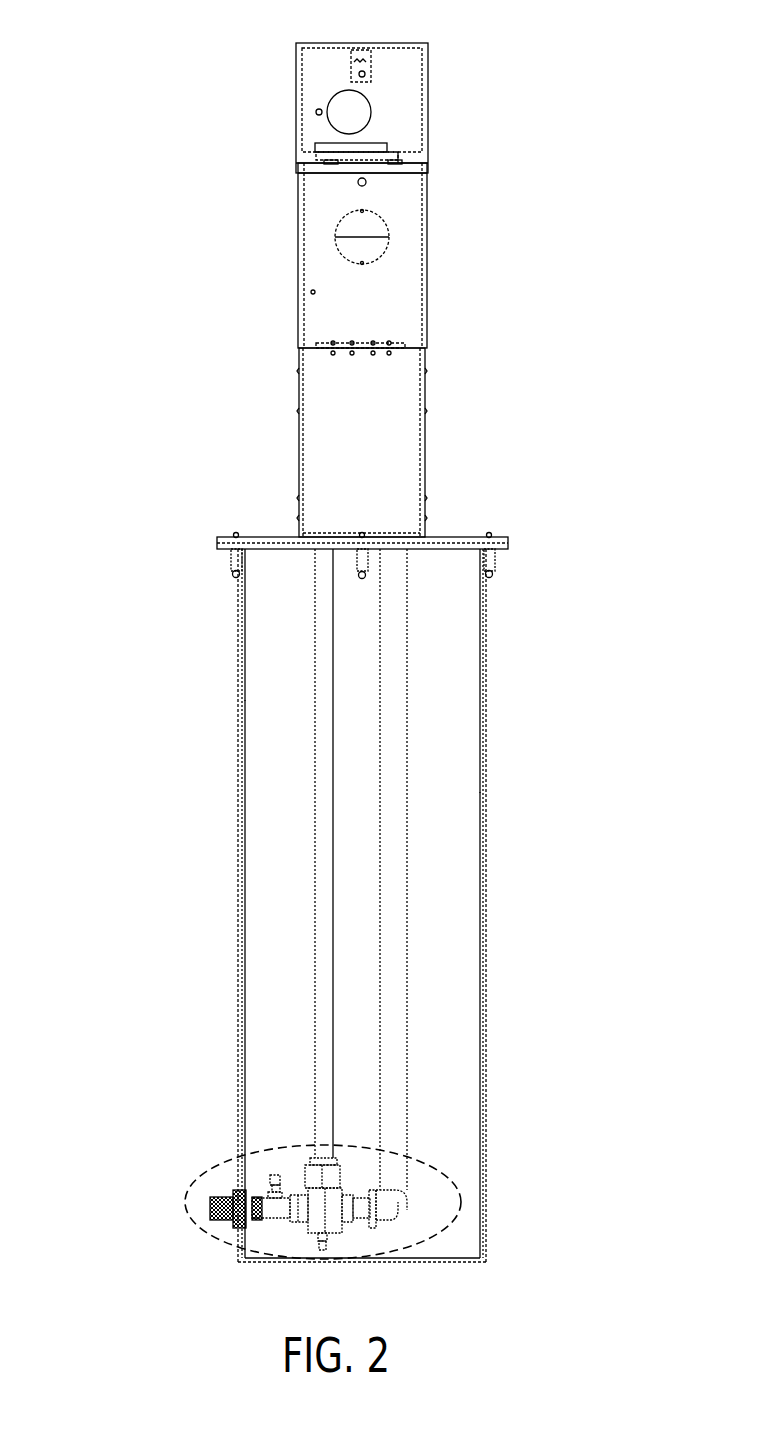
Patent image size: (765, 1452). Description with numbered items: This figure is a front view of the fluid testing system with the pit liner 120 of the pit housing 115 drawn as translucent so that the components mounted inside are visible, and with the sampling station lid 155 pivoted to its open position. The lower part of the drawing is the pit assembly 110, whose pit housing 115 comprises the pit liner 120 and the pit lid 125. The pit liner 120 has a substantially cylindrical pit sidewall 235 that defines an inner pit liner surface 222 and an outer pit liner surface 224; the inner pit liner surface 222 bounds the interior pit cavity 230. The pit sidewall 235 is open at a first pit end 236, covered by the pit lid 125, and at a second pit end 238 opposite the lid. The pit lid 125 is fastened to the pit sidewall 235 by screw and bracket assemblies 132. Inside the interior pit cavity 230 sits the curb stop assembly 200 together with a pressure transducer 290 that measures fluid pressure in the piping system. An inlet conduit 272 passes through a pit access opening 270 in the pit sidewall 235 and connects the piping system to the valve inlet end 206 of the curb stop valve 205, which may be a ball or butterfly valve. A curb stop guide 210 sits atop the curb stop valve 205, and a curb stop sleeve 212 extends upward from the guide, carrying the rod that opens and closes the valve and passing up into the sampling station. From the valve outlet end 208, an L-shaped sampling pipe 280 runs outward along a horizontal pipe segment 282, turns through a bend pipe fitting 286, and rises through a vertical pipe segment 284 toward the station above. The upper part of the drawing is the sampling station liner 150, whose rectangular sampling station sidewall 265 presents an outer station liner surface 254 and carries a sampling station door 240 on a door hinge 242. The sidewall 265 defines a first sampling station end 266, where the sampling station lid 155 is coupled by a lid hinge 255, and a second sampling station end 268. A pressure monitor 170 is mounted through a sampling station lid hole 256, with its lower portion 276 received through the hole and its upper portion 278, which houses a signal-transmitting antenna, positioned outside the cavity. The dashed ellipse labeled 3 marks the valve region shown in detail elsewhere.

The pit assembly 110 is at (88, 895).
The pit housing 115 is at (182, 973).
The pit liner 120 is at (210, 655).
The pit lid 125 is at (281, 545).
The screw and bracket assemblies 132 is at (360, 559).
The sampling station liner 150 is at (282, 262).
The sampling station lid 155 is at (382, 73).
The pressure monitor 170 is at (384, 133).
The curb stop assembly 200 is at (268, 1128).
The curb stop valve 205 is at (323, 1208).
The valve inlet end 206 is at (290, 1208).
The valve outlet end 208 is at (352, 1210).
The curb stop guide 210 is at (334, 1173).
The curb stop sleeve 212 is at (322, 877).
The inner pit liner surface 222 is at (470, 790).
The outer pit liner surface 224 is at (498, 896).
The interior pit cavity 230 is at (466, 688).
The pit sidewall 235 is at (486, 752).
The first pit end 236 is at (437, 552).
The second pit end 238 is at (422, 1265).
The sampling station door 240 is at (323, 236).
The door hinge 242 is at (347, 349).
The outer station liner surface 254 is at (380, 273).
The lid hinge 255 is at (388, 164).
The sampling station lid hole 256 is at (349, 98).
The sampling station sidewall 265 is at (398, 303).
The first sampling station end 266 is at (417, 160).
The second sampling station end 268 is at (395, 535).
The pit access opening 270 is at (235, 1192).
The inlet conduit 272 is at (210, 1207).
The lower portion 276 is at (338, 161).
The upper portion 278 is at (328, 155).
The sampling pipe 280 is at (422, 952).
The horizontal pipe segment 282 is at (358, 1200).
The vertical pipe segment 284 is at (393, 1025).
The bend pipe fitting 286 is at (388, 1207).
The pressure transducer 290 is at (270, 1180).
The detail view reference 3 is at (463, 1197).